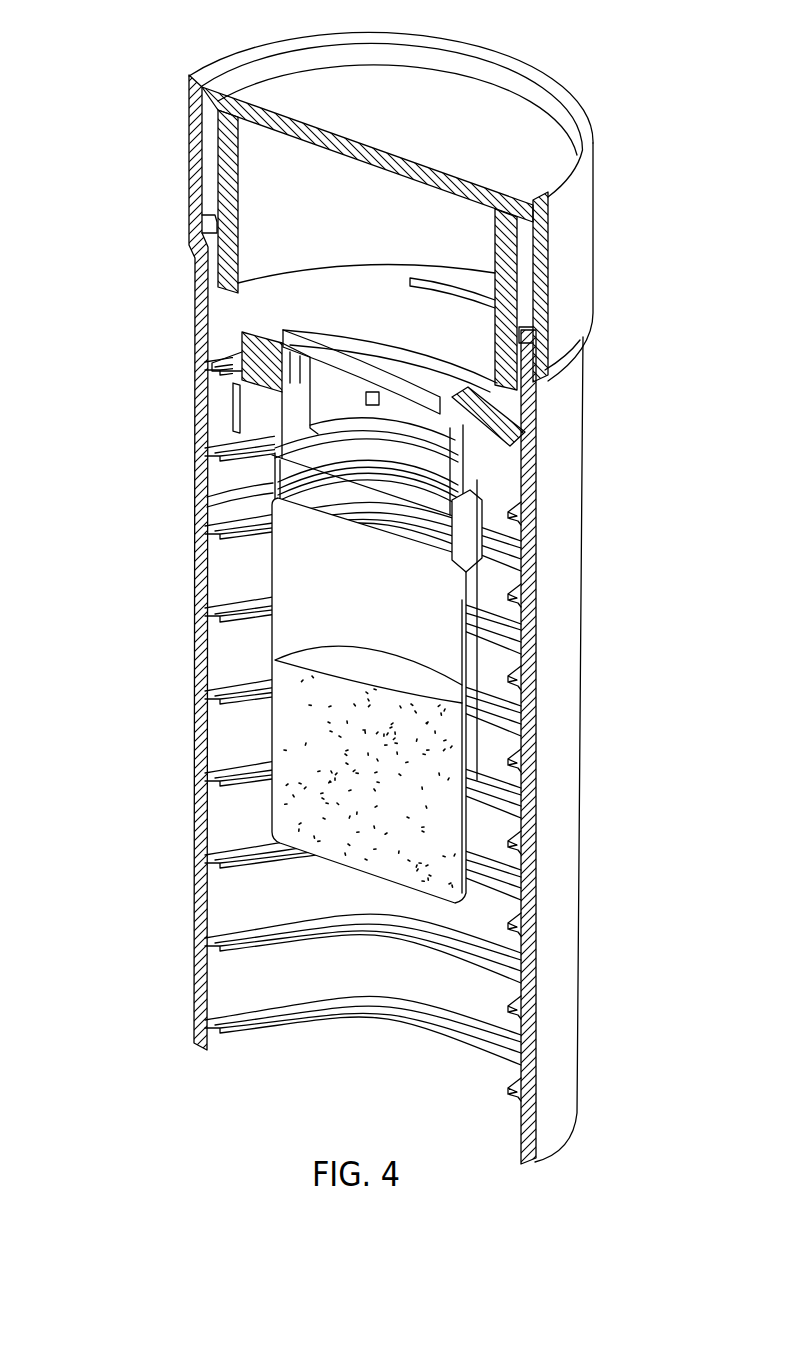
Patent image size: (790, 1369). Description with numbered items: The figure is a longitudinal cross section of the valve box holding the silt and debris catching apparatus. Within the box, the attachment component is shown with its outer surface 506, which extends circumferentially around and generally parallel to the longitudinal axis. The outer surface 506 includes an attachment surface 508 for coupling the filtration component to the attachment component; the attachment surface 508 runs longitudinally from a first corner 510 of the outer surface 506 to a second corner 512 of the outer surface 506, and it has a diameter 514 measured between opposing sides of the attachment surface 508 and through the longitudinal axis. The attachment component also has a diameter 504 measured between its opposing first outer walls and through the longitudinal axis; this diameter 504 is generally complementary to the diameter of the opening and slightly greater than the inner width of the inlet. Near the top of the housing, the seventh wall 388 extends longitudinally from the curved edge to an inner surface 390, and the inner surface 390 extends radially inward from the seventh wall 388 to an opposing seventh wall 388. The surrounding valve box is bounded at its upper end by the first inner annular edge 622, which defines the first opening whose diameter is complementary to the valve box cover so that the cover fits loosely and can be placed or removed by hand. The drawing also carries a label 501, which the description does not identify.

The outer surface 506 is at (523, 597).
The first inner annular edge 622 is at (547, 195).
The insert body 501 is at (237, 470).
The inner surface 390 is at (343, 390).
The seventh wall 388 is at (413, 407).
The diameter 504 is at (375, 488).
The first corner 510 is at (277, 495).
The second corner 512 is at (223, 530).
The diameter 514 is at (356, 520).
The attachment surface 508 is at (462, 570).